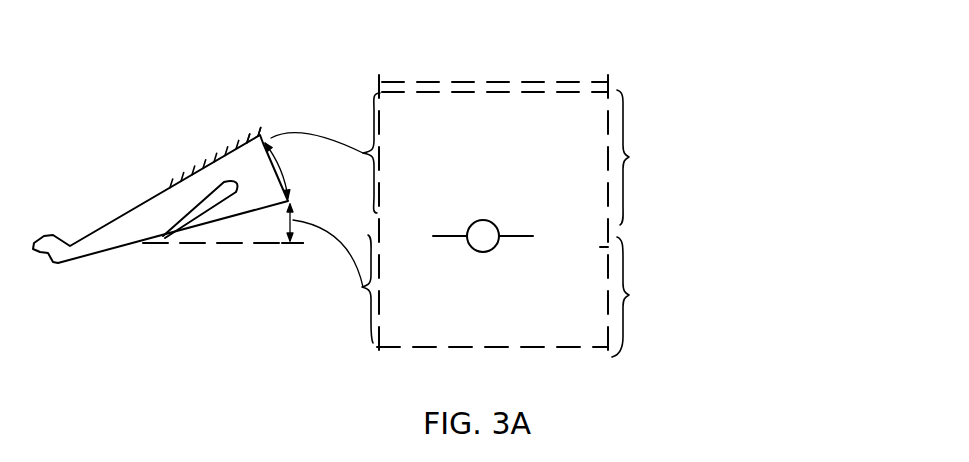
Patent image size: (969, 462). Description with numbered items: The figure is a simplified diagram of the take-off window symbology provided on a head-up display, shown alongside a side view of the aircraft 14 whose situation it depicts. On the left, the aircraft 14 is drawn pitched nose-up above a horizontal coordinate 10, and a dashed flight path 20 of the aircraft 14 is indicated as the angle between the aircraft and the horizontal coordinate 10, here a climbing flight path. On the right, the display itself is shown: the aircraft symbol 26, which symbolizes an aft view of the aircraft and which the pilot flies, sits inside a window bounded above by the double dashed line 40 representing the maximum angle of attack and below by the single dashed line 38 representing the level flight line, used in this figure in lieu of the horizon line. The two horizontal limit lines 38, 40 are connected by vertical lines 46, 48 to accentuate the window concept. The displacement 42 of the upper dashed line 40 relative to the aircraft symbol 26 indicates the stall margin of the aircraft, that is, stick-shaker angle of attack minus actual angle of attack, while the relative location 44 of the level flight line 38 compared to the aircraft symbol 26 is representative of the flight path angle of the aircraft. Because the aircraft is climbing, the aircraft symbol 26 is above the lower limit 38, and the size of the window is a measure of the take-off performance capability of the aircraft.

The horizontal coordinate 10 is at (225, 247).
The aircraft 14 is at (81, 259).
The flight path 20 is at (289, 200).
The aircraft symbol 26 is at (238, 139).
The level flight line 38 is at (548, 348).
The maximum angle of attack line 40 is at (592, 85).
The displacement of upper dashed line 42 is at (629, 157).
The flight path angle location 44 is at (629, 295).
The vertical line 46 is at (375, 153).
The vertical line 48 is at (605, 247).